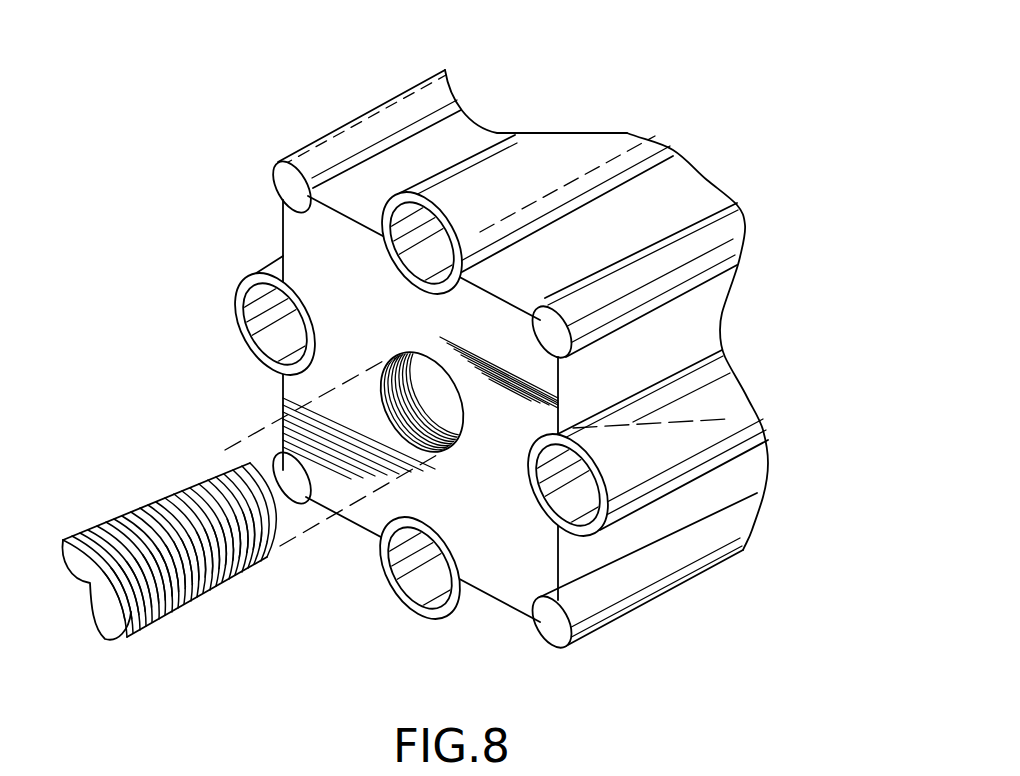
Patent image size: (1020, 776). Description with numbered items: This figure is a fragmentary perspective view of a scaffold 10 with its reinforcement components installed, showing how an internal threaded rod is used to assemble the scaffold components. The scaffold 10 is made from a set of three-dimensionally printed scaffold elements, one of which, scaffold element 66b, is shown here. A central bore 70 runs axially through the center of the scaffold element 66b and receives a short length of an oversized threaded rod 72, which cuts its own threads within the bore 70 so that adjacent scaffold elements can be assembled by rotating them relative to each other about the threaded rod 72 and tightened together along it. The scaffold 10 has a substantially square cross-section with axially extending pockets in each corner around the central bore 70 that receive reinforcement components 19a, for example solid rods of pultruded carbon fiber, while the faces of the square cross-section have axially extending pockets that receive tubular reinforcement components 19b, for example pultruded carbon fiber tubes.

The scaffold 10 is at (303, 240).
The reinforcement components 19a is at (375, 122).
The tubular reinforcement components 19b is at (572, 150).
The scaffold element 66b is at (640, 654).
The central bore 70 is at (462, 442).
The threaded rod 72 is at (187, 597).